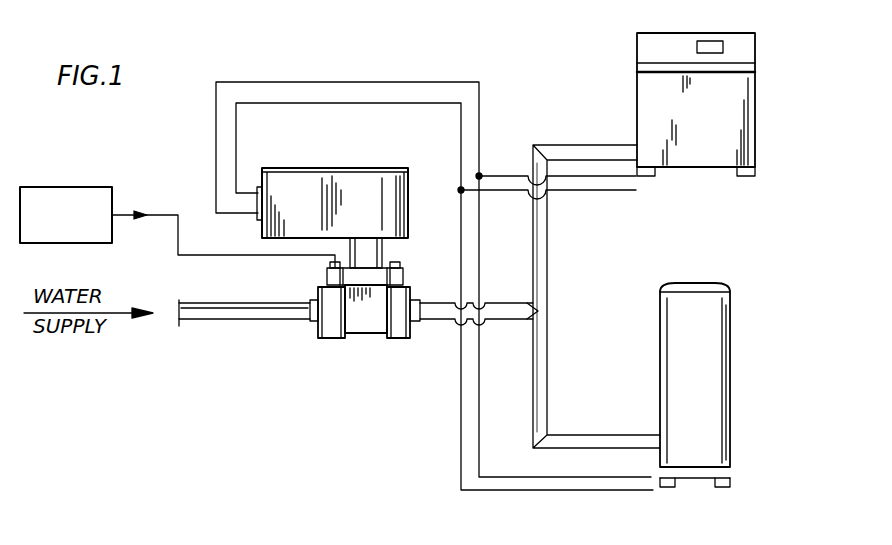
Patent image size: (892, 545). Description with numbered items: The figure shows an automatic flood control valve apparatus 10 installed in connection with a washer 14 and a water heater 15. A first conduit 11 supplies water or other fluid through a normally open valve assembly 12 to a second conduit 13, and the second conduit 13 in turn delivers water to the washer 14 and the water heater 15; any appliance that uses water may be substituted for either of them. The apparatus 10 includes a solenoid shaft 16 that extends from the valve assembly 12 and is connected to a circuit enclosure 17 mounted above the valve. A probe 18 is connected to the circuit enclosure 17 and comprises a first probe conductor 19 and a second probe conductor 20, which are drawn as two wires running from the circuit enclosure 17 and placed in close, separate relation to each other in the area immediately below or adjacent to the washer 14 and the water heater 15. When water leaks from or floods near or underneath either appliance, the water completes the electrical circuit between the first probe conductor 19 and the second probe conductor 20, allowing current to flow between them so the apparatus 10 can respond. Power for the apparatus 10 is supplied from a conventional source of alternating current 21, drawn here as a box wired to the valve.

The automatic flood control valve apparatus 10 is at (312, 351).
The first conduit 11 is at (250, 322).
The normally open valve assembly 12 is at (368, 325).
The second conduit 13 is at (542, 403).
The washer 14 is at (743, 145).
The water heater 15 is at (721, 400).
The solenoid shaft 16 is at (383, 252).
The circuit enclosure 17 is at (367, 181).
The probe 18 is at (385, 76).
The first probe conductor 19 is at (286, 105).
The second probe conductor 20 is at (300, 82).
The source of alternating current 21 is at (73, 187).